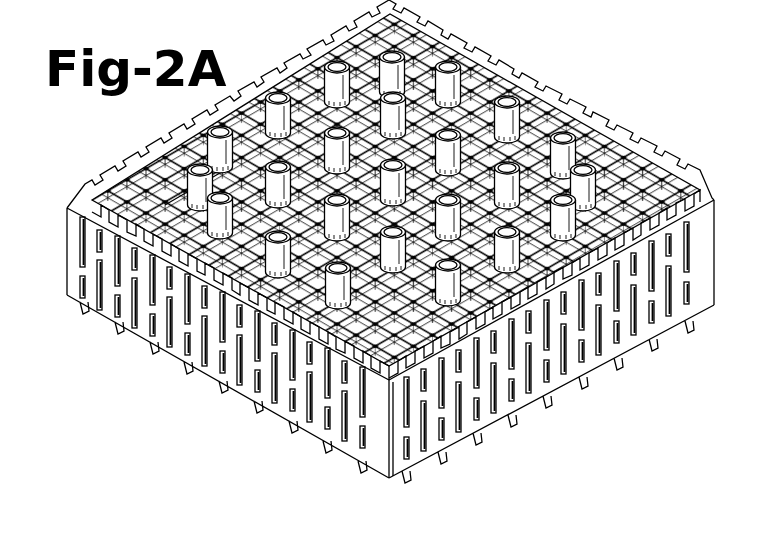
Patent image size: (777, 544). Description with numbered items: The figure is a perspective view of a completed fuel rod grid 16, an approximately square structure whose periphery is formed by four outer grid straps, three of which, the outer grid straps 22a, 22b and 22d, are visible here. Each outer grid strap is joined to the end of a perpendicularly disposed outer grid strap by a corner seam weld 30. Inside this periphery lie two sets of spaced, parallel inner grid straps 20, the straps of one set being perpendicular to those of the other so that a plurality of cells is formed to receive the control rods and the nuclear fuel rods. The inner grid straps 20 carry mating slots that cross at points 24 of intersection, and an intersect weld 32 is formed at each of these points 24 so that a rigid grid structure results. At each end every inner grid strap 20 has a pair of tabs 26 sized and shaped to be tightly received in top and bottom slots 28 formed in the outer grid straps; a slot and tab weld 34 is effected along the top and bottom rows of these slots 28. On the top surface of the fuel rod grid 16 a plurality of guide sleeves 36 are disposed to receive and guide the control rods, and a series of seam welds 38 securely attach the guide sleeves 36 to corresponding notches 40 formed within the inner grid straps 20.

The fuel rod grid 16 is at (593, 103).
The inner grid straps 20 is at (615, 147).
The outer grid strap 22a is at (623, 340).
The outer grid strap 22b is at (250, 85).
The outer grid strap 22d is at (185, 367).
The points of intersection 24 is at (127, 184).
The tabs 26 is at (697, 260).
The slots 28 is at (680, 292).
The corner seam weld 30 is at (380, 470).
The intersect weld 32 is at (125, 213).
The slot and tab weld 34 is at (405, 478).
The guide sleeves 36 is at (197, 187).
The seam welds 38 is at (335, 280).
The notches 40 is at (440, 108).